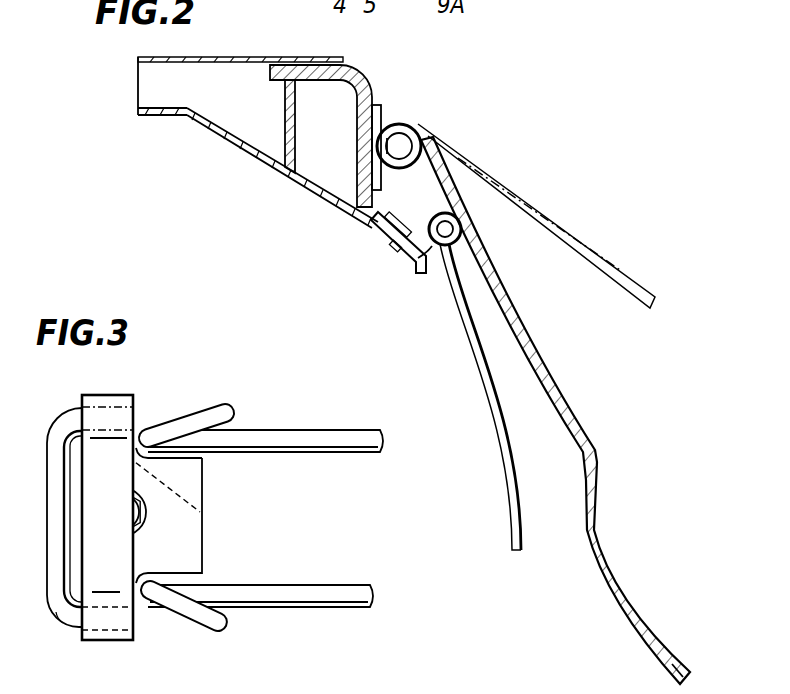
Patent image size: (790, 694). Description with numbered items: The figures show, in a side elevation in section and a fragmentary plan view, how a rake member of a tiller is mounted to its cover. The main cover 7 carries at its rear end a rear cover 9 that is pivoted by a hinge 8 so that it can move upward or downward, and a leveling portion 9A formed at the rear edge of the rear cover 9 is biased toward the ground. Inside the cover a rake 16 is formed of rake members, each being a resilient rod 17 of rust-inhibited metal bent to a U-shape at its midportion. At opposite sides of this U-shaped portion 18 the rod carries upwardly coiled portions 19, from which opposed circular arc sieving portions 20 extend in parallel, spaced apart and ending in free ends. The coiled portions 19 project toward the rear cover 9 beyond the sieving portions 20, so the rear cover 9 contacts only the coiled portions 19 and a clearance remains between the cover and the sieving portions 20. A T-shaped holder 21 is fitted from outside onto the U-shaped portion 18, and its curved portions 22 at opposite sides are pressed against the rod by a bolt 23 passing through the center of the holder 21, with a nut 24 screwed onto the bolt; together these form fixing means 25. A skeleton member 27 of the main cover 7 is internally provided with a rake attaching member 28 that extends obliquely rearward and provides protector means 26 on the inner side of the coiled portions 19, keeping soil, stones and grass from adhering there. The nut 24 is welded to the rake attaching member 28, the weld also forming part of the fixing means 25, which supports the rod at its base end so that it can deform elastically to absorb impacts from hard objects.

In FIG. 2, the main cover 7 is at (188, 58).
In FIG. 2, the skeleton member 27 is at (365, 81).
In FIG. 2, the rake attaching member 28 is at (315, 188).
In FIG. 2, the hinge 8 is at (397, 138).
In FIG. 2, the fixing means 25 is at (397, 210).
In FIG. 3, the fixing means 25 is at (55, 623).
In FIG. 2, the T-shaped holder 21 is at (459, 158).
In FIG. 3, the T-shaped holder 21 is at (203, 510).
In FIG. 2, the rear cover 9 is at (498, 262).
In FIG. 2, the leveling portion 9A is at (659, 654).
In FIG. 2, the coiled portions 19 is at (454, 229).
In FIG. 3, the coiled portions 19 is at (177, 426).
In FIG. 2, the sieving portions 20 is at (497, 397).
In FIG. 3, the sieving portions 20 is at (352, 433).
In FIG. 2, the rake 16 is at (468, 348).
In FIG. 3, the rake 16 is at (357, 613).
In FIG. 2, the resilient rod 17 is at (529, 499).
In FIG. 3, the resilient rod 17 is at (331, 612).
In FIG. 2, the U-shaped portion 18 is at (385, 223).
In FIG. 3, the U-shaped portion 18 is at (46, 557).
In FIG. 2, the nut 24 is at (391, 251).
In FIG. 2, the protector means 26 is at (418, 258).
In FIG. 3, the curved portions 22 is at (97, 395).
In FIG. 3, the bolt 23 is at (110, 510).